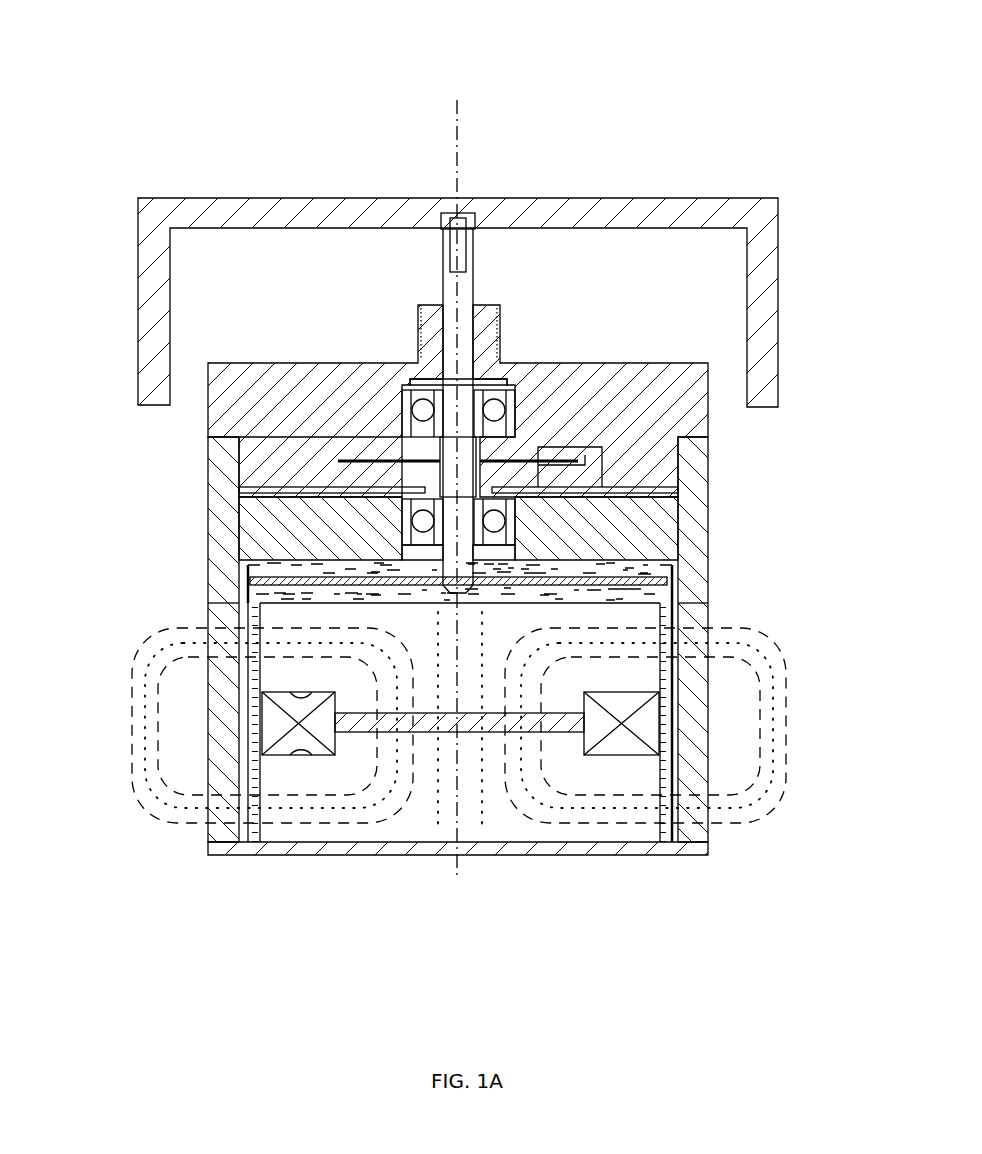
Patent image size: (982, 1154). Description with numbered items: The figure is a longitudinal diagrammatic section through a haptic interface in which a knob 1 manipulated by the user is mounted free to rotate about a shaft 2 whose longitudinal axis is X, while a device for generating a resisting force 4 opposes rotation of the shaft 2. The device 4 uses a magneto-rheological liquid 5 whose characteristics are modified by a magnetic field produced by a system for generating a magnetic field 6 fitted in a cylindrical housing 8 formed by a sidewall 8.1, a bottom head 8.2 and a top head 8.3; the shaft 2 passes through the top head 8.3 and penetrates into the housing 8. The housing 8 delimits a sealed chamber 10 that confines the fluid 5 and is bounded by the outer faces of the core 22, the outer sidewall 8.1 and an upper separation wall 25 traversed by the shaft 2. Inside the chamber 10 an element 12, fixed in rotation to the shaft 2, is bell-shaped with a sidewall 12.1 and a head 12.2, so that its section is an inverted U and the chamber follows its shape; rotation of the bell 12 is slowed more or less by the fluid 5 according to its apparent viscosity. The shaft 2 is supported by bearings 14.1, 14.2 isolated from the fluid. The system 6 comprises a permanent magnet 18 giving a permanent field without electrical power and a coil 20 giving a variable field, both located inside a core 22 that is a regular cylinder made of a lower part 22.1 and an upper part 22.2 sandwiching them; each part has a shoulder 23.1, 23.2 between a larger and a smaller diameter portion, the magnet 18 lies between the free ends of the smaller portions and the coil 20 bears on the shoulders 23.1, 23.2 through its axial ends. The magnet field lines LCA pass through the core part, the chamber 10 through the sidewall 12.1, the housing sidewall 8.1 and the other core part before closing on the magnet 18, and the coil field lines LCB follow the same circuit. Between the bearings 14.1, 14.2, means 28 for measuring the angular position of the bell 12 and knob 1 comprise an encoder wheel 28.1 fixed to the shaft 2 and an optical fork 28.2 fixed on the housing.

The axis X is at (457, 120).
The knob 1 is at (772, 250).
The shaft 2 is at (467, 285).
The device for generating a resisting force 4 is at (170, 768).
The magneto-rheological liquid 5 is at (247, 560).
The system for generating a magnetic field 6 is at (347, 745).
The housing 8 is at (208, 692).
The sidewall 8.1 is at (703, 817).
The bottom head 8.2 is at (697, 850).
The top head 8.3 is at (222, 438).
The sealed chamber 10 is at (665, 580).
The element 12 is at (677, 597).
The sidewall 12.1 is at (672, 650).
The head 12.2 is at (673, 576).
The bearing 14.1 is at (513, 413).
The bearing 14.2 is at (403, 530).
The means of generating a permanent magnetic field 18 is at (520, 720).
The means capable of generating a variable magnetic field 20 is at (627, 742).
The core 22 is at (508, 818).
The lower part 22.1 is at (613, 798).
The upper part 22.2 is at (318, 650).
The shoulder 23.1 is at (307, 755).
The shoulder 23.2 is at (330, 695).
The upper separation wall 25 is at (690, 513).
The means for measuring the angular position 28 is at (382, 446).
The encoder wheel 28.1 is at (348, 460).
The optical fork 28.2 is at (598, 457).
The magnet field lines LCA is at (215, 823).
The field lines of the coil LCB is at (580, 862).